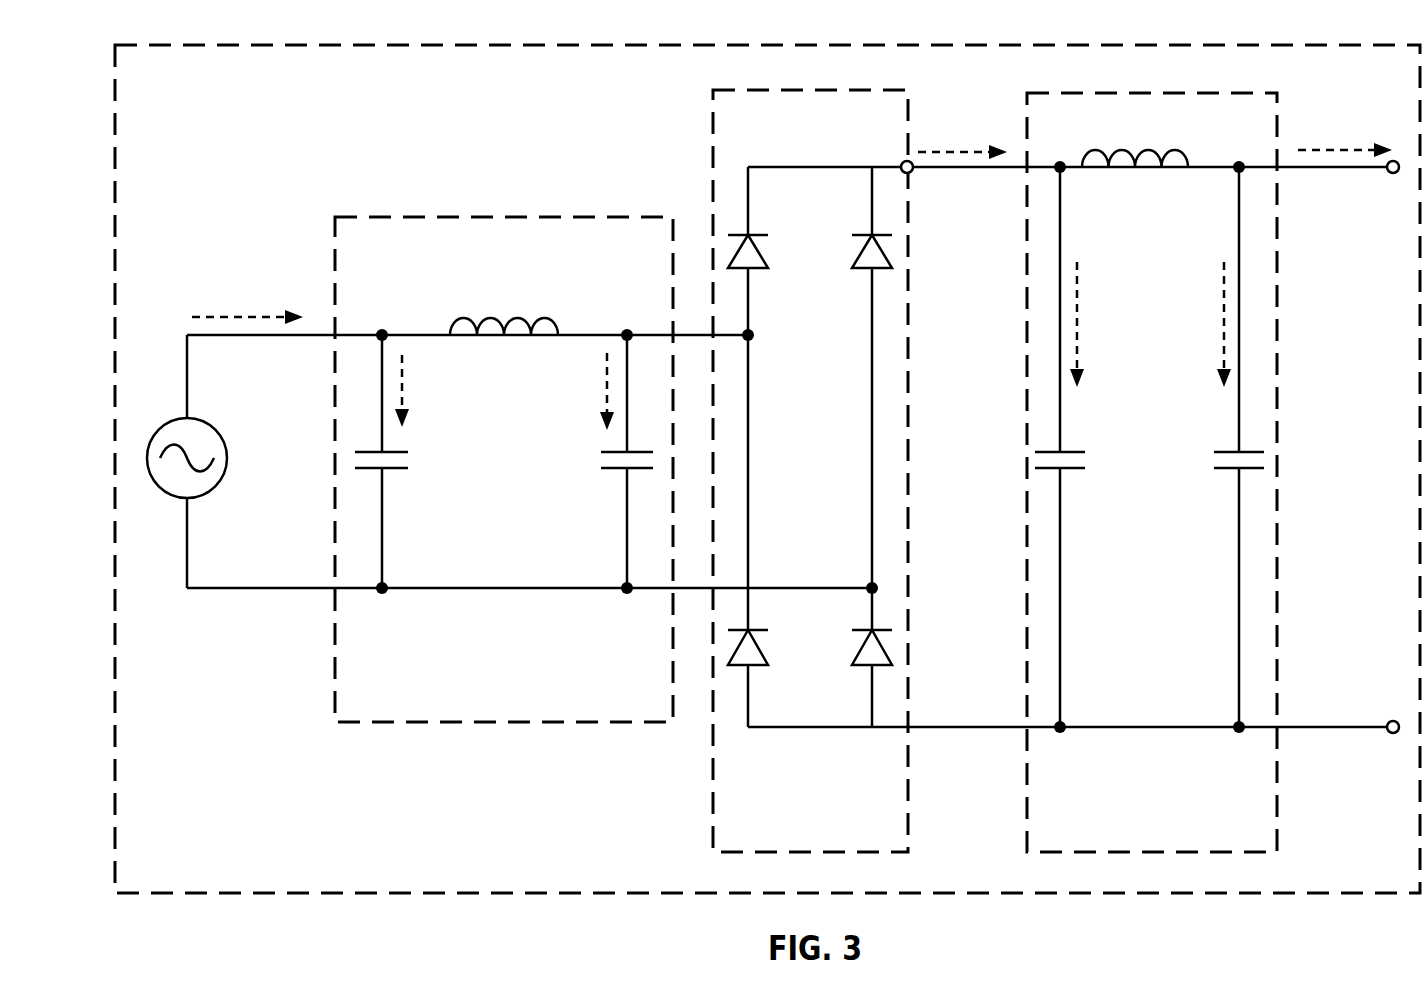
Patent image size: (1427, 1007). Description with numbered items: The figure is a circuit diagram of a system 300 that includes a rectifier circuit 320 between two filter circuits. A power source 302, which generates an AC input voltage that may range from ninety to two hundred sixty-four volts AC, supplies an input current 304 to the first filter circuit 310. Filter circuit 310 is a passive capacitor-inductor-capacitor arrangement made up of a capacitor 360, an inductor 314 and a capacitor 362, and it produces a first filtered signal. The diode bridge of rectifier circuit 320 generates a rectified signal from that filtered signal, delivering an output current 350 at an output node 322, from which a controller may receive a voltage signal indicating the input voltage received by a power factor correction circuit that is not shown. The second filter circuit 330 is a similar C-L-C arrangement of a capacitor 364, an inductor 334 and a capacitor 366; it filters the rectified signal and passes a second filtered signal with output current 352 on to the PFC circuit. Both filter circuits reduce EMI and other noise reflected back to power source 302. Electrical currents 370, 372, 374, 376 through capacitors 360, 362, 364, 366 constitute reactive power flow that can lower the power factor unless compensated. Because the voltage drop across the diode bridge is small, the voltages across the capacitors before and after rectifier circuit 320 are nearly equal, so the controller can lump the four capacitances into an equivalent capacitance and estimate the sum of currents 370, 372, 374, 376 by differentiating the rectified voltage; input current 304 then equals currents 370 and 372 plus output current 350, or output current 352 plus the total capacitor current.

The system 300 is at (1408, 887).
The power source 302 is at (225, 620).
The input current 304 is at (255, 315).
The filter circuit 310 is at (660, 714).
The inductor 314 is at (545, 317).
The rectifier circuit 320 is at (897, 844).
The output node 322 is at (912, 172).
The filter circuit 330 is at (1265, 844).
The inductor 334 is at (1178, 150).
The output current 350 is at (937, 150).
The output current 352 is at (1323, 150).
The capacitor 360 is at (404, 470).
The capacitor 362 is at (606, 470).
The capacitor 364 is at (1067, 470).
The capacitor 366 is at (1232, 470).
The electrical current 370 is at (405, 392).
The electrical current 372 is at (605, 392).
The electrical current 374 is at (1080, 332).
The electrical current 376 is at (1222, 332).